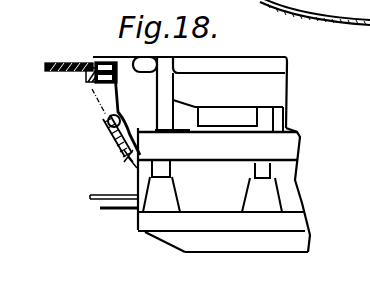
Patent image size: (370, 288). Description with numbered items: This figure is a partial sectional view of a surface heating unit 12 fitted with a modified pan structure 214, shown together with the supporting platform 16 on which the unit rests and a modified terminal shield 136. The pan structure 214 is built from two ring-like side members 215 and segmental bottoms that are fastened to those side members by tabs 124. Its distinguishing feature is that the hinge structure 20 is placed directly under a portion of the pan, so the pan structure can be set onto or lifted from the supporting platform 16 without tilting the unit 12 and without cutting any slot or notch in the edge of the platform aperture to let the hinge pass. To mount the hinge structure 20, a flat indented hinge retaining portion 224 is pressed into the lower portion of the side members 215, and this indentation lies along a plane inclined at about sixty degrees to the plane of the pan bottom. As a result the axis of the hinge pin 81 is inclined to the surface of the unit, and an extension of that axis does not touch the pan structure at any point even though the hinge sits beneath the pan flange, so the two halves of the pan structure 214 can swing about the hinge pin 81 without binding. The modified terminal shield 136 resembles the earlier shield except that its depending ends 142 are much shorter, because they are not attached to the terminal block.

The housing body 12 is at (273, 64).
The supporting platform 16 is at (70, 70).
The hinge structure 20 is at (107, 137).
The hinge pin 81 is at (108, 118).
The tabs 124 is at (124, 138).
The modified terminal shield 136 is at (281, 152).
The depending ends 142 is at (131, 161).
The hinged pan structure 214 is at (97, 62).
The ring-like side members 215 is at (122, 76).
The flat indented hinge retaining portion 224 is at (107, 116).